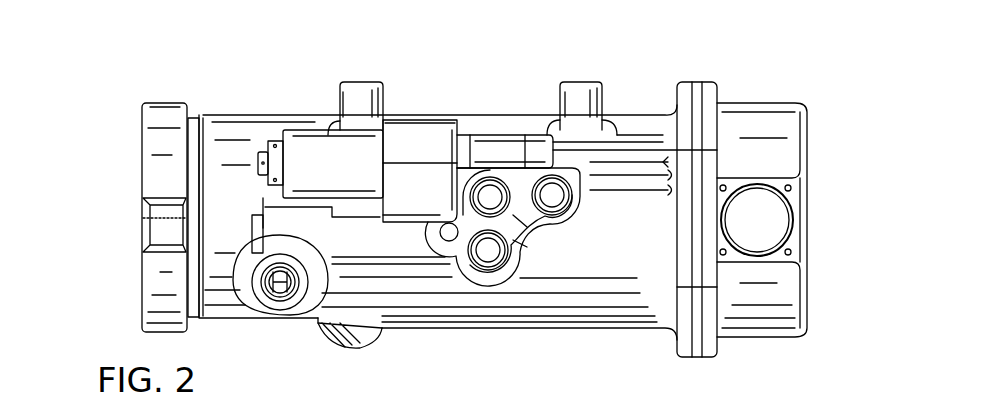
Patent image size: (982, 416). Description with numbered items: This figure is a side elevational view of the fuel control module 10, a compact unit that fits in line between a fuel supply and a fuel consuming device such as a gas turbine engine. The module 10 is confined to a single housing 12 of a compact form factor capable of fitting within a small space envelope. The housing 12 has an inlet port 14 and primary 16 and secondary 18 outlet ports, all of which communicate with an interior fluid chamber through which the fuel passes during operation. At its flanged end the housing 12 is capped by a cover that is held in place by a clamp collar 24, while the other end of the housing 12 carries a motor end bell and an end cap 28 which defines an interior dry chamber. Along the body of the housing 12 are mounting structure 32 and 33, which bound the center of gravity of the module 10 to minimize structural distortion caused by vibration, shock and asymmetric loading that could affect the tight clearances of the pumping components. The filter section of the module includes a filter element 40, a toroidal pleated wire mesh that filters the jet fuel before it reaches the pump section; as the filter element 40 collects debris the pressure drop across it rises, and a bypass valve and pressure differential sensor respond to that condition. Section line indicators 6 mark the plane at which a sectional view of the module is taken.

The fuel control module 10 is at (606, 20).
The housing 12 is at (254, 114).
The inlet port 14 is at (278, 305).
The primary outlet port 16 is at (491, 180).
The secondary outlet port 18 is at (563, 186).
The clamp collar 24 is at (143, 281).
The end cap 28 is at (752, 108).
The mounting structure 32 is at (362, 93).
The mounting structure 33 is at (587, 93).
The filter element 40 is at (346, 176).
The section line 6- 6 is at (108, 222).